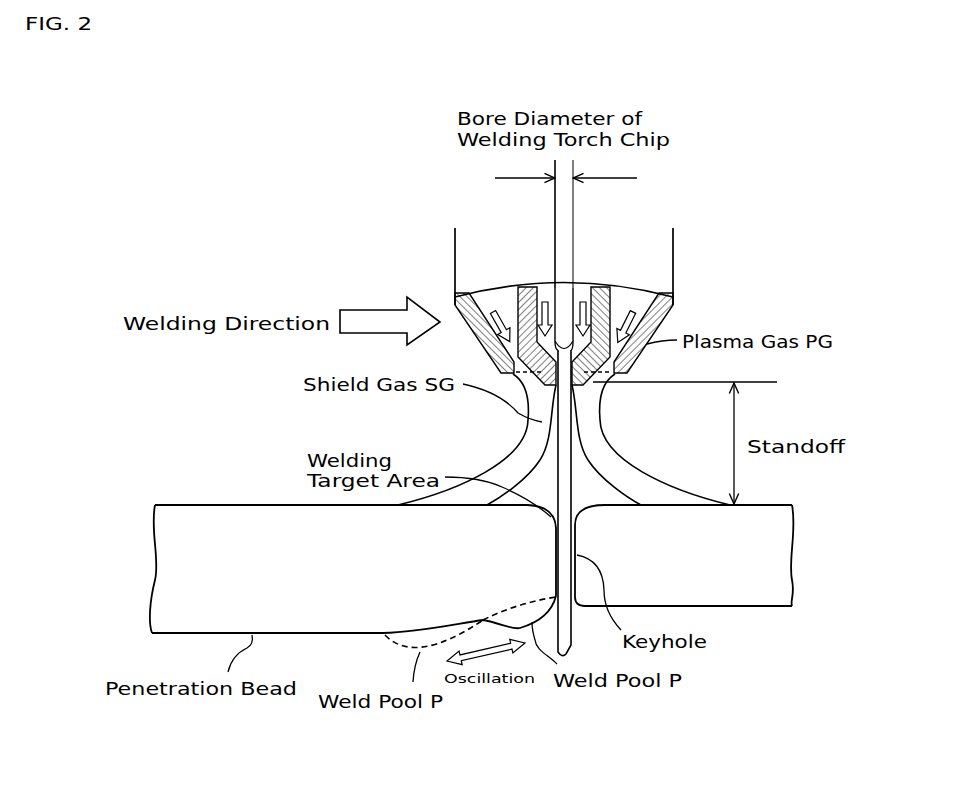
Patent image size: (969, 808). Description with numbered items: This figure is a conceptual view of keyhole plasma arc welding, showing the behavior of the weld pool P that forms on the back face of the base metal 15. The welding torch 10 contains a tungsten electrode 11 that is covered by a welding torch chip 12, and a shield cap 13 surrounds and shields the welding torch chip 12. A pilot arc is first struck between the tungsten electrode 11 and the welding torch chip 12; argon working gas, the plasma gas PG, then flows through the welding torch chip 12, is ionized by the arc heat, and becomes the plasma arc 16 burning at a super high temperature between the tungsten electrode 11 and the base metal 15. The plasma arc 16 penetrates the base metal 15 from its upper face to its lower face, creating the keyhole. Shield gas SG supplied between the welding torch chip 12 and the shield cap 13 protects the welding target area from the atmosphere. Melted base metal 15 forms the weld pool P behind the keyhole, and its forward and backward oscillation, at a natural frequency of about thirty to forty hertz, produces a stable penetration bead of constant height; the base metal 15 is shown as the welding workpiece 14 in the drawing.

The welding torch 10 is at (740, 222).
The tungsten electrode 11 is at (557, 286).
The welding torch chip 12 is at (602, 286).
The shield cap 13 is at (676, 308).
The welding workpiece 14 is at (272, 503).
The base metal 15 is at (203, 528).
The plasma arc 16 is at (565, 463).